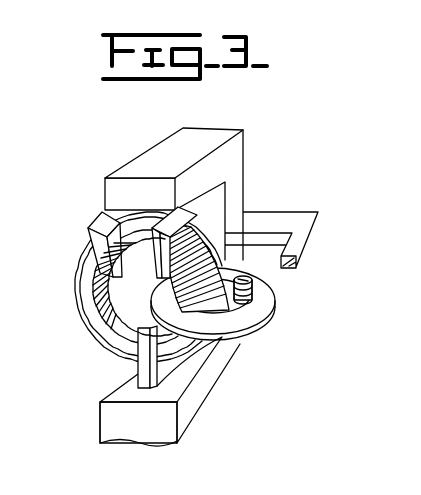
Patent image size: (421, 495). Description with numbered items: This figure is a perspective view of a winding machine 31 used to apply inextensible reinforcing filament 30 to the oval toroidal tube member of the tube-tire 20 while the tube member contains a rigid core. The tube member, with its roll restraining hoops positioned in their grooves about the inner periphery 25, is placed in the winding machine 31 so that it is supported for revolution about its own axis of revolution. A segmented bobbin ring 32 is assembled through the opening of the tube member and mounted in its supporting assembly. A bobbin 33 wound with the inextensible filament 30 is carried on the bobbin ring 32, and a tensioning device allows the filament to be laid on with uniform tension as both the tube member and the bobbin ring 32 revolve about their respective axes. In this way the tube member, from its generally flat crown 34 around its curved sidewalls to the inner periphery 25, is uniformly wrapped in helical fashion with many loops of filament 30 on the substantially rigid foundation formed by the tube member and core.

The oval pneumatic tube-tire 20 is at (66, 262).
The inner periphery 25 is at (97, 308).
The inextensible filament 30 is at (246, 346).
The winding machine 31 is at (101, 421).
The segmented bobbin ring 32 is at (223, 336).
The bobbin 33 is at (252, 283).
The crown 34 is at (231, 218).